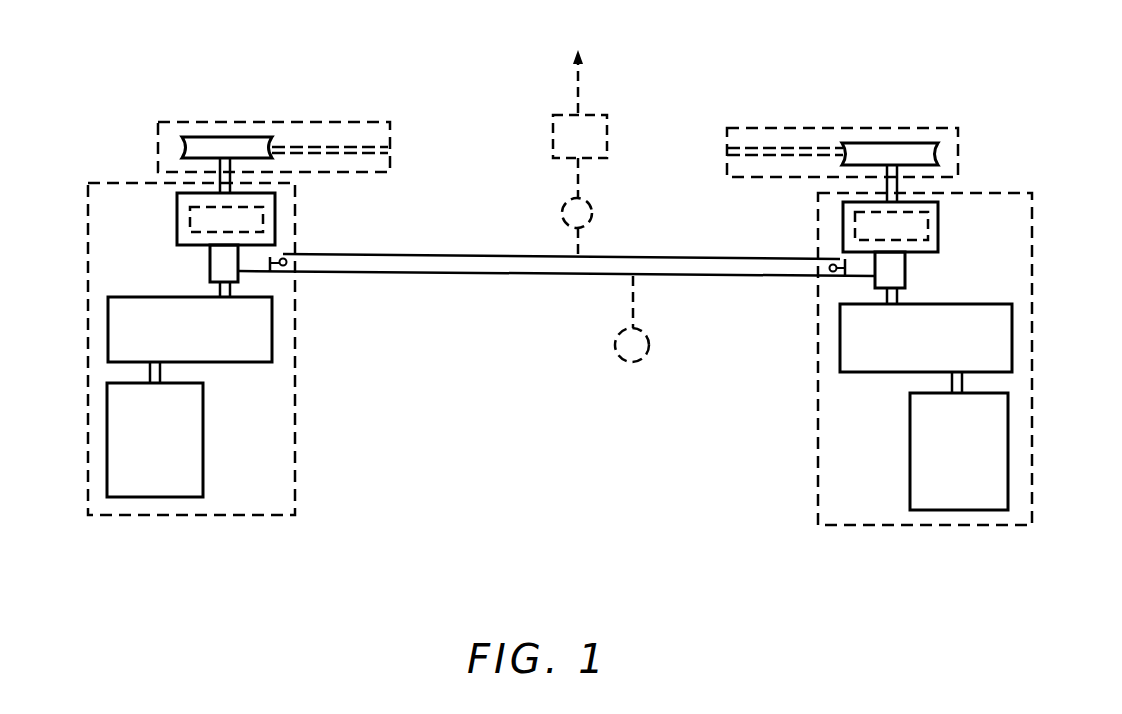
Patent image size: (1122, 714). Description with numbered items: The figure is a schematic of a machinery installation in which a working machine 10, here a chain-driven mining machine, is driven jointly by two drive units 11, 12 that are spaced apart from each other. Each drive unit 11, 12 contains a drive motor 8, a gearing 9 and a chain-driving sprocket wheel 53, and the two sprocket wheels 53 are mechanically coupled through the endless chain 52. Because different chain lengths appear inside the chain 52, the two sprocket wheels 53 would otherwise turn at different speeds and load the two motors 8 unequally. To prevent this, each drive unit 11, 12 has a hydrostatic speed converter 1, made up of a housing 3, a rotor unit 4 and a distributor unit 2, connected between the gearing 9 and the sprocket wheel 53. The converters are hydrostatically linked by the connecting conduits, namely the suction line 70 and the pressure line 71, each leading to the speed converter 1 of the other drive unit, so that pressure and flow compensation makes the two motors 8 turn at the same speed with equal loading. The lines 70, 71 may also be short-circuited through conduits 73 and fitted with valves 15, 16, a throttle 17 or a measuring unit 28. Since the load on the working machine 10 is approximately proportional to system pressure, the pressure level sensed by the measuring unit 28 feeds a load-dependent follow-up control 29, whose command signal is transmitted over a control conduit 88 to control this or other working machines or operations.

The hydrostatic speed converter 1 is at (285, 229).
The distributor unit 2 is at (210, 265).
The housing 3 is at (177, 200).
The rotor unit 4 is at (190, 221).
The drive motor 8 is at (107, 425).
The gearing 9 is at (108, 314).
The working machine 10 is at (290, 122).
The drive unit 11 is at (295, 425).
The drive unit 12 is at (817, 430).
The valve 15 is at (666, 343).
The throttle 17 is at (649, 345).
The valve 16 is at (287, 256).
The measuring unit 28 is at (592, 208).
The load-dependent follow-up control 29 is at (607, 135).
The endless chain 52 is at (355, 147).
The chain-driving sprocket wheel 53 is at (207, 137).
The suction line 70 is at (556, 296).
The pressure line 71 is at (492, 258).
The short-circuit conduit 73 is at (265, 272).
The control conduit 88 is at (588, 70).